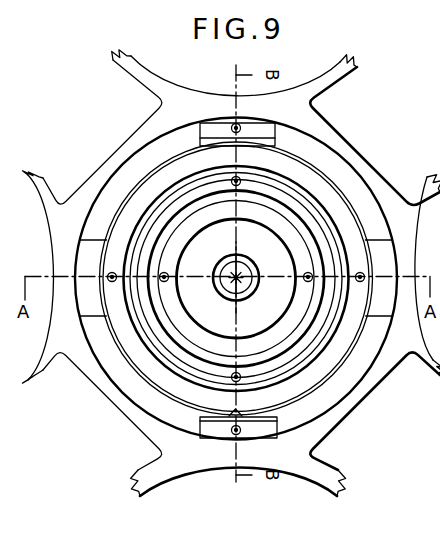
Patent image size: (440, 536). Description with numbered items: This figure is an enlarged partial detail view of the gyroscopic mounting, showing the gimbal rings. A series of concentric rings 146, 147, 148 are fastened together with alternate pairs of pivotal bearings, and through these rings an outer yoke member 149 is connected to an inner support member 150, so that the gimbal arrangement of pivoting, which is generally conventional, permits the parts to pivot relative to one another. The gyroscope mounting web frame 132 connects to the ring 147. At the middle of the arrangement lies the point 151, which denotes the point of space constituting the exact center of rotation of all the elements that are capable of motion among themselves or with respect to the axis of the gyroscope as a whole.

The gyroscope mounting web frame 132 is at (372, 405).
The concentric ring 146 is at (318, 182).
The concentric ring 147 is at (177, 197).
The concentric ring 148 is at (183, 328).
The outer yoke member 149 is at (215, 428).
The inner support member 150 is at (313, 318).
The center of rotation point 151 is at (250, 278).